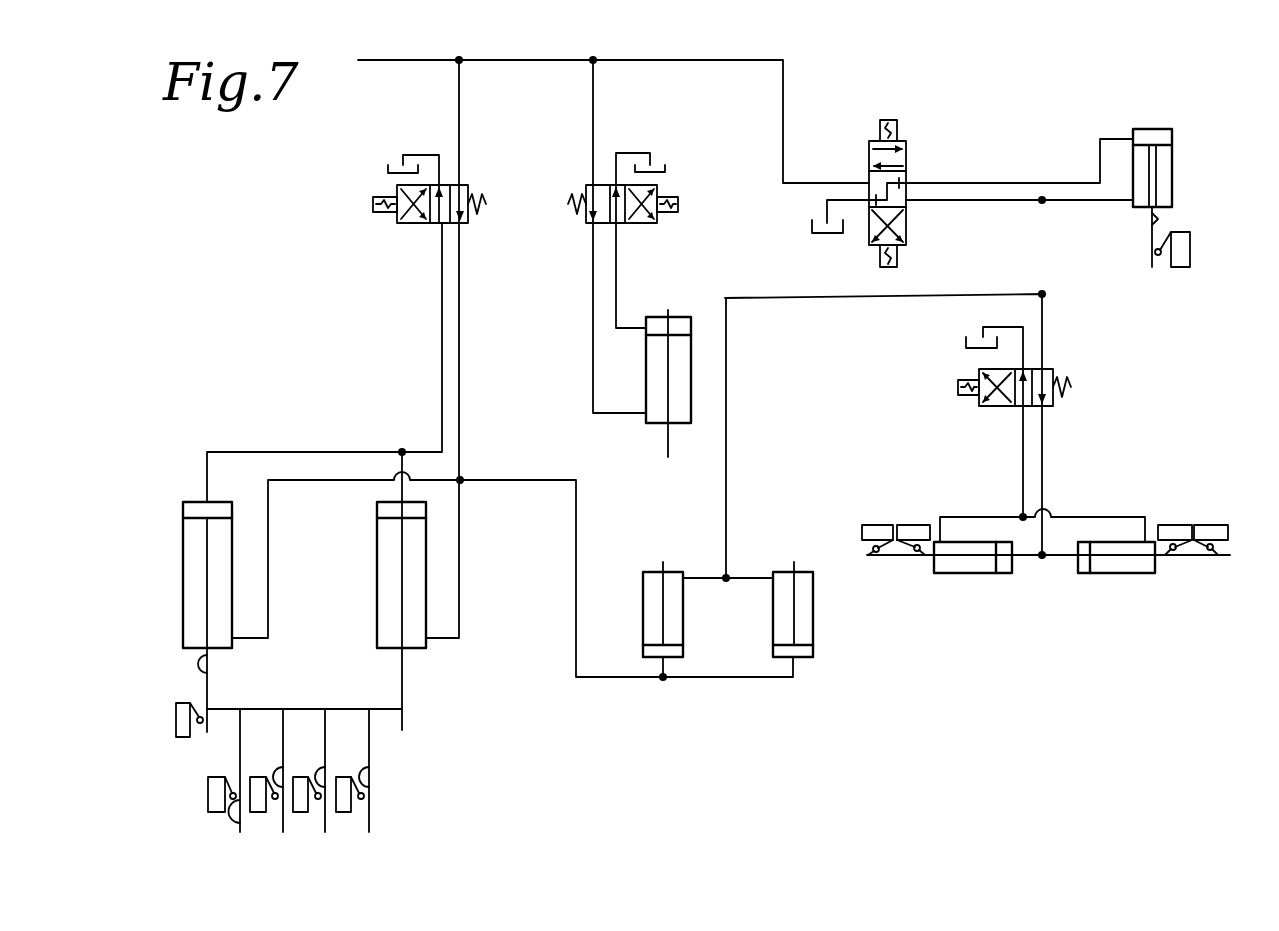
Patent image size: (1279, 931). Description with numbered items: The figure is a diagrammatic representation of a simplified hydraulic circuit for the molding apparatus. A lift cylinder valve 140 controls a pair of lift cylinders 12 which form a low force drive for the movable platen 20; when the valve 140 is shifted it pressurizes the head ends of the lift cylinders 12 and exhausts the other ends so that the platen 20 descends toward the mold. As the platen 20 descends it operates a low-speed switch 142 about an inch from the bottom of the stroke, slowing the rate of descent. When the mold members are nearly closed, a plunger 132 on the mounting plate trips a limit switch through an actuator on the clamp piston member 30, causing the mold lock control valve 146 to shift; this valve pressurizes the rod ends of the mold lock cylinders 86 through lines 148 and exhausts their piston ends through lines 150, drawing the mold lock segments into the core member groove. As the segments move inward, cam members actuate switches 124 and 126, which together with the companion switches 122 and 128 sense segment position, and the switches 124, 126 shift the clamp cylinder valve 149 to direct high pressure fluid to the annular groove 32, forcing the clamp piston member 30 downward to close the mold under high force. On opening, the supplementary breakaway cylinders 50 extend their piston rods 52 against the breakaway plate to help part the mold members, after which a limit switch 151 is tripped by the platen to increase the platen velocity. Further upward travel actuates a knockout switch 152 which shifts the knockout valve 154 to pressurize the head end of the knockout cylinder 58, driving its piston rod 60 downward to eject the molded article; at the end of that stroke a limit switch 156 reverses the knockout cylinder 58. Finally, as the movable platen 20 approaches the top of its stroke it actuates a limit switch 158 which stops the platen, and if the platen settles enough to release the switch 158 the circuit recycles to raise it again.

The lift cylinders 12 is at (183, 553).
The movable platen 20 is at (262, 709).
The clamp piston member 30 is at (645, 365).
The annular groove 32 is at (680, 325).
The supplementary breakaway cylinders 50 is at (643, 612).
The piston rods 52 is at (660, 565).
The knockout cylinder 58 is at (1172, 183).
The piston rod 60 is at (1152, 238).
The mold lock cylinders 86 is at (963, 573).
The switch 122 is at (873, 525).
The switch 124 is at (176, 725).
The switch 126 is at (1170, 525).
The switch 128 is at (1212, 525).
The plunger 132 is at (198, 664).
The lift cylinder valve 140 is at (415, 224).
The low-speed switch 142 is at (258, 813).
The mold lock control valve 146 is at (1050, 370).
The lines 148 is at (981, 517).
The clamp cylinder valve 149 is at (636, 224).
The lines 150 is at (1043, 557).
The limit switch 151 is at (298, 813).
The knockout switch 152 is at (345, 813).
The knockout valve 154 is at (906, 158).
The limit switch 156 is at (1190, 250).
The limit switch 158 is at (216, 813).